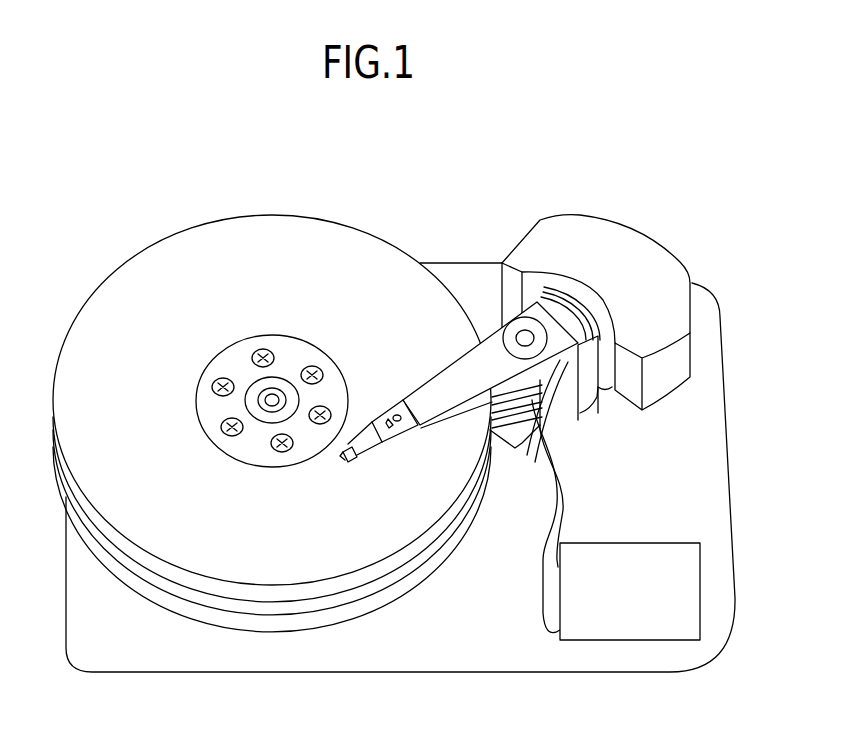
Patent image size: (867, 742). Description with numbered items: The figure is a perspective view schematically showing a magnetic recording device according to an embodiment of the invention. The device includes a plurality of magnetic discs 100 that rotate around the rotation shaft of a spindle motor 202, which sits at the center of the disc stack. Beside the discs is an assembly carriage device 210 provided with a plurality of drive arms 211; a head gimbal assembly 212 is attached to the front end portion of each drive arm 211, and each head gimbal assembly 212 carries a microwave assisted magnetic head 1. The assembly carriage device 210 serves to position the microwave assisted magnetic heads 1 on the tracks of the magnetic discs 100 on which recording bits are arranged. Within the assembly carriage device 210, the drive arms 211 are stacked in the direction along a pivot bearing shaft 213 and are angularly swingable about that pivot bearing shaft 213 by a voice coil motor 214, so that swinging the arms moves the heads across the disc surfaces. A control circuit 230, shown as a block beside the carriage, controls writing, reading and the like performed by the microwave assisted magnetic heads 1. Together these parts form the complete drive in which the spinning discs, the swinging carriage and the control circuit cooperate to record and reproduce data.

The microwave assisted magnetic head 1 is at (353, 462).
The magnetic disc 100 is at (150, 265).
The spindle motor 202 is at (275, 398).
The assembly carriage device 210 is at (616, 200).
The drive arm 211 is at (452, 375).
The head gimbal assembly 212 is at (369, 414).
The pivot bearing shaft 213 is at (524, 336).
The voice coil motor 214 is at (598, 390).
The control circuit 230 is at (635, 643).